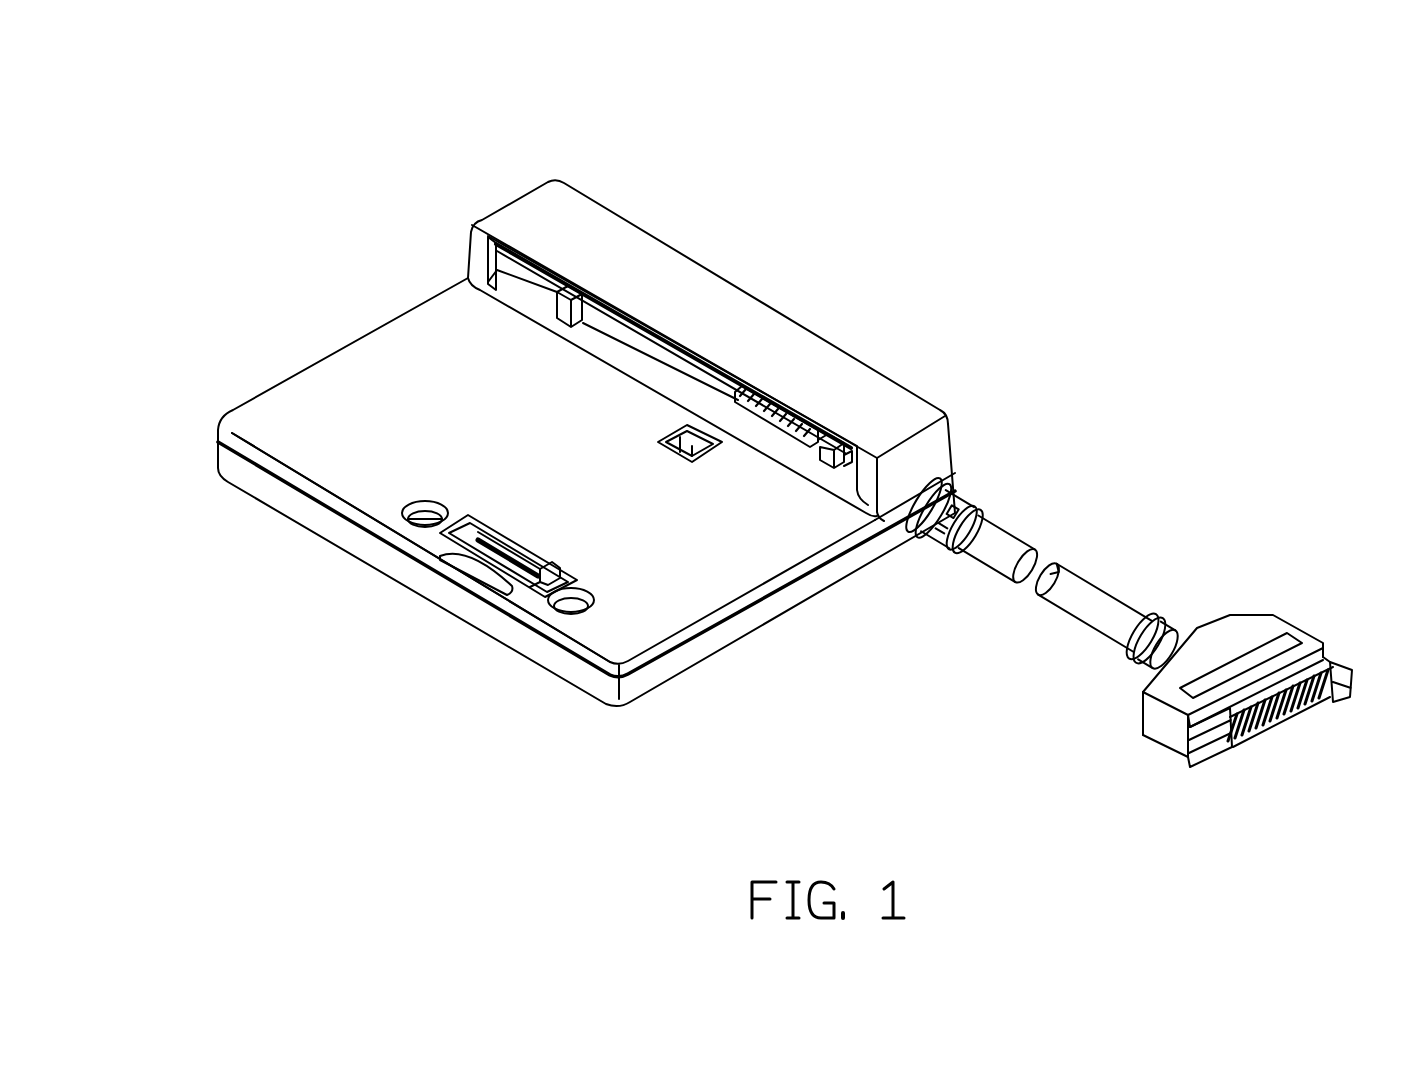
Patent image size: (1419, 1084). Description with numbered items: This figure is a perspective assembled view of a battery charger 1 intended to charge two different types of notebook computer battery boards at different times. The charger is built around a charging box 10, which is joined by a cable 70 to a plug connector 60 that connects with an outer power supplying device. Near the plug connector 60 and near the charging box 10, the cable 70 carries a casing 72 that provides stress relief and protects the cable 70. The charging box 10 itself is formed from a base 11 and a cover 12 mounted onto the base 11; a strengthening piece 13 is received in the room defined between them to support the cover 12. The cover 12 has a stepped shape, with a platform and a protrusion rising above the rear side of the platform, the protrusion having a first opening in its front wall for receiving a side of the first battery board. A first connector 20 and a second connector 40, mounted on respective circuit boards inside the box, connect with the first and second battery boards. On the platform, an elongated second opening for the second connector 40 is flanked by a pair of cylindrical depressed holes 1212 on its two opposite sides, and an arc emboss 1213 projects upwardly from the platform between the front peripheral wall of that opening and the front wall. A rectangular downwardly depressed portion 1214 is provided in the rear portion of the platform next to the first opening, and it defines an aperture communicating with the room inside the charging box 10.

The battery charger 1 is at (1090, 287).
The charging box 10 is at (708, 350).
The base 11 is at (423, 582).
The cover 12 is at (752, 568).
The strengthening piece 13 is at (605, 343).
The first connector 20 is at (813, 452).
The second connector 40 is at (553, 568).
The plug connector 60 is at (1280, 628).
The cable 70 is at (1080, 603).
The casing 72 is at (1160, 625).
The cylindrical depressed hole 1212 is at (405, 513).
The arc emboss 1213 is at (490, 575).
The rectangular downwardly depressed portion 1214 is at (655, 438).